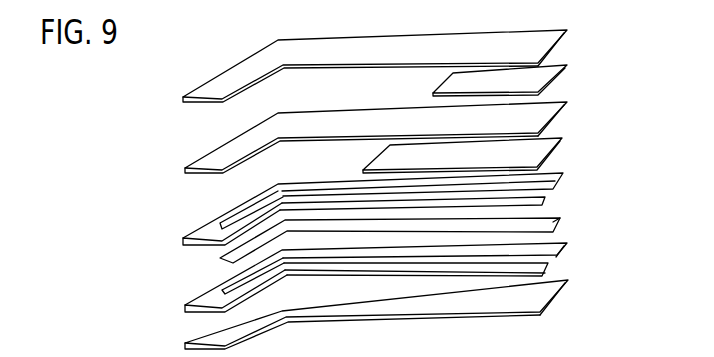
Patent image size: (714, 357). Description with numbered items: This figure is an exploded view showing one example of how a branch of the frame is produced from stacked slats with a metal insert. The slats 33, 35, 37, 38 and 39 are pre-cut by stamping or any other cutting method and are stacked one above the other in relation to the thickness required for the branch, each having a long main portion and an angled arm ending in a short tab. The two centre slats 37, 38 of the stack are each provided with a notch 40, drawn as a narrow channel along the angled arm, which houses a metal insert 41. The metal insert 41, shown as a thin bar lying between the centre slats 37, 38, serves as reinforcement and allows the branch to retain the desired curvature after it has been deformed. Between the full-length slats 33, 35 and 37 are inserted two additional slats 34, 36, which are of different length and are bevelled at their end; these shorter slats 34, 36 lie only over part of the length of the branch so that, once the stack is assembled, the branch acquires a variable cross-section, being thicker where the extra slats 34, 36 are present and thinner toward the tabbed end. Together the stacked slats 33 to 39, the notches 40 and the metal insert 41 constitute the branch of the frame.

The slat 33 is at (537, 45).
The slat 34 is at (543, 73).
The slat 35 is at (545, 110).
The slat 36 is at (540, 147).
The centre slat 37 is at (543, 180).
The centre slat 38 is at (542, 252).
The slat 39 is at (540, 296).
The notch 40 is at (240, 283).
The metal insert 41 is at (540, 224).